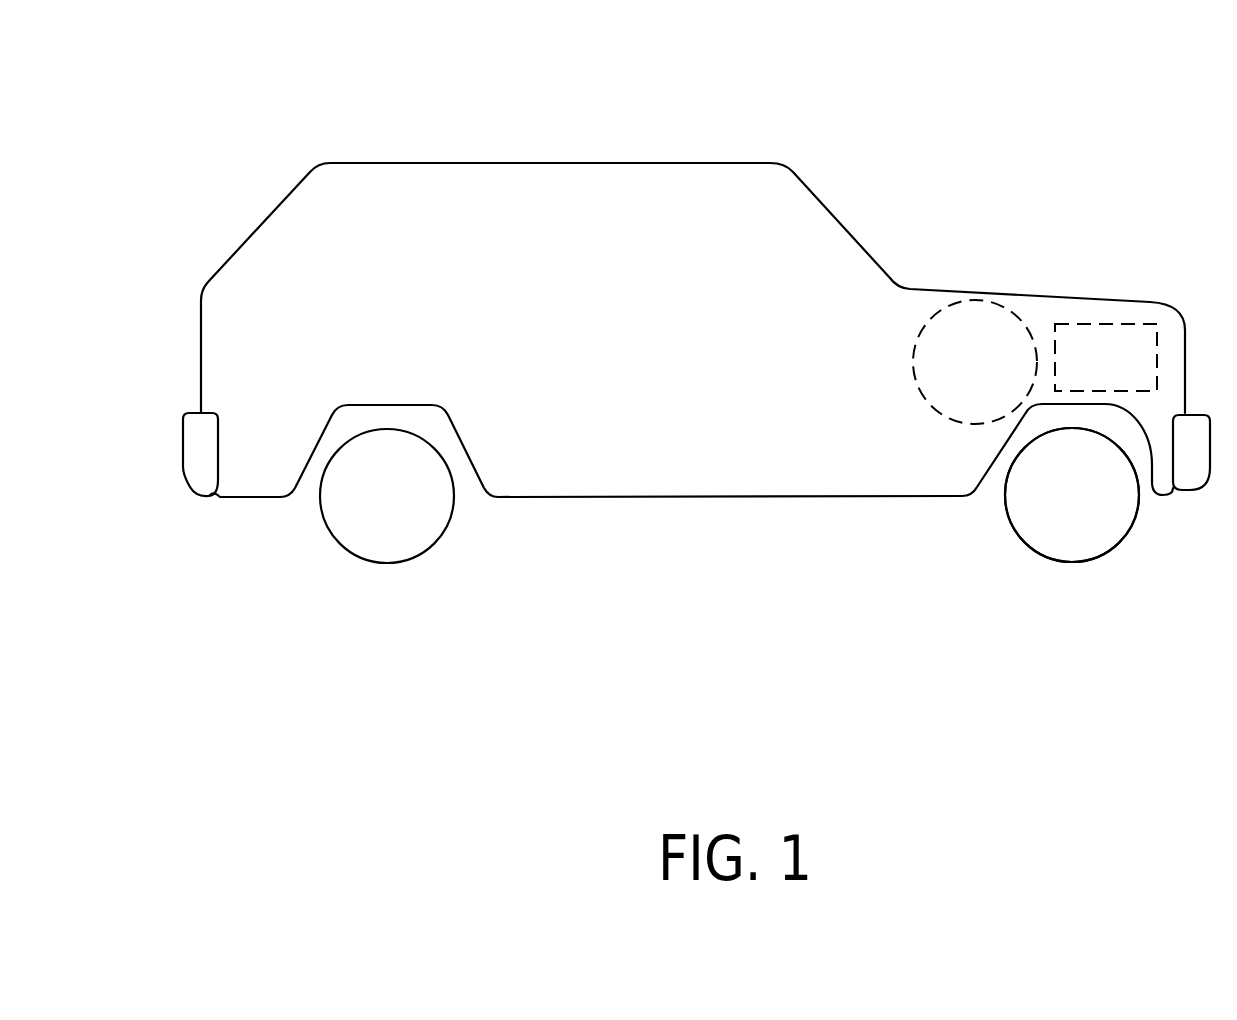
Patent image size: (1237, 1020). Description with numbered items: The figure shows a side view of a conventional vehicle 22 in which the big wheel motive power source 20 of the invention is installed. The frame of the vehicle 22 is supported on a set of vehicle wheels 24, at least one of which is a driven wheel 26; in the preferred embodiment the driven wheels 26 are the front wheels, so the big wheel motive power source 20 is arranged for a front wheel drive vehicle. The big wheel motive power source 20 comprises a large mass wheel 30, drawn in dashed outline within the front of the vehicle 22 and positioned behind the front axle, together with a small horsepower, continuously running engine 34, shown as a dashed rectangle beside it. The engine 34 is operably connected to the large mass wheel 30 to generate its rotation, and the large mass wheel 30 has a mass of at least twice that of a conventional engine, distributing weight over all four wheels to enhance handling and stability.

The big wheel motive power source 20 is at (1040, 304).
The vehicle 22 is at (610, 134).
The vehicle wheels 24 is at (370, 566).
The driven wheel 26 is at (1100, 517).
The large mass wheel 30 is at (958, 338).
The continuously running engine 34 is at (1103, 342).